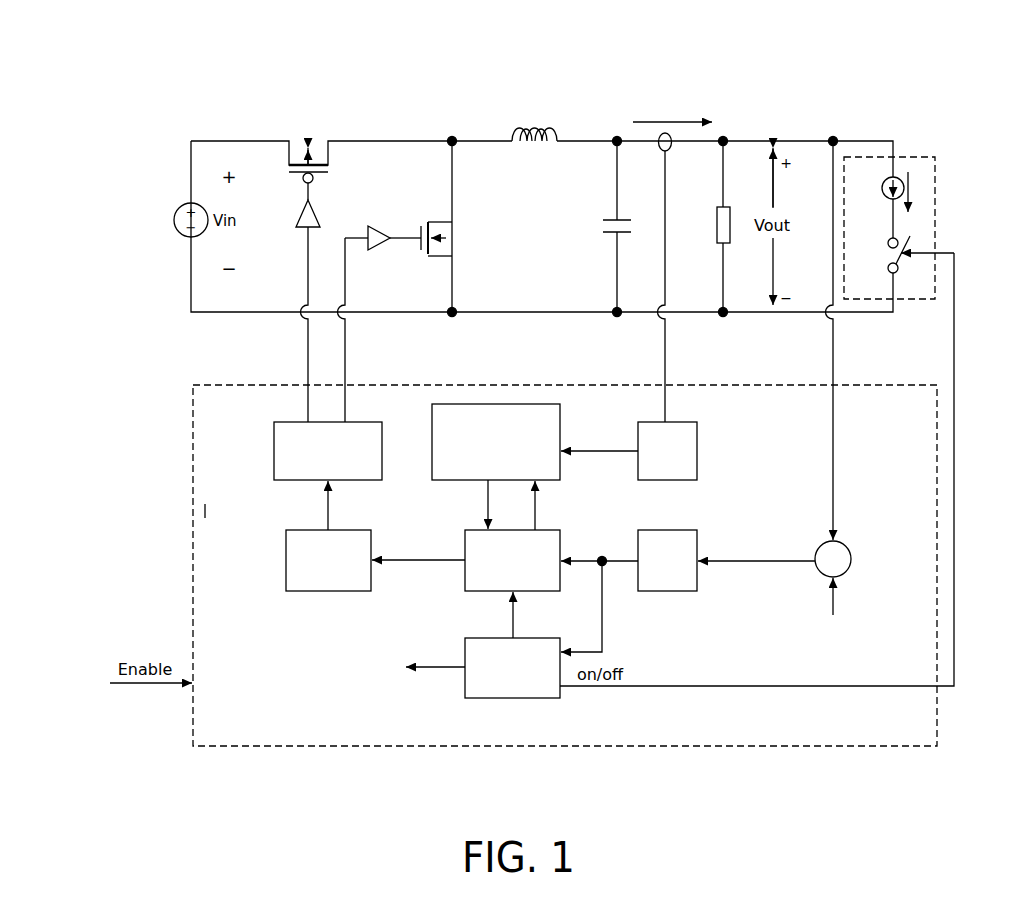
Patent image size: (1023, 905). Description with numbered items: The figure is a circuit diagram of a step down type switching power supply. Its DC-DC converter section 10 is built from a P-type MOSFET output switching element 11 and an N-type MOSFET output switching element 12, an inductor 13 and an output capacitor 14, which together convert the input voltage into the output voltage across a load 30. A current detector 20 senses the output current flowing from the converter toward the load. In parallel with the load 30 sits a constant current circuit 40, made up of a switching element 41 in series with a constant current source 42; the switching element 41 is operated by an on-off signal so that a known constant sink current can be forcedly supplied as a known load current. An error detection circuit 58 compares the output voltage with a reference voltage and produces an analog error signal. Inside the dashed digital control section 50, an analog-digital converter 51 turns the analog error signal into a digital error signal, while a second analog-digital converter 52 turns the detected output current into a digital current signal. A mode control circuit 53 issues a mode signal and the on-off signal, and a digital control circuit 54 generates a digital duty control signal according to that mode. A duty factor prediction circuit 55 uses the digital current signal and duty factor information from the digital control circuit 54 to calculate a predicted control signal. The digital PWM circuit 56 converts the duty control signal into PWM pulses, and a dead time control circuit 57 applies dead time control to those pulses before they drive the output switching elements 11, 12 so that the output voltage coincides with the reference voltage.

The DC-DC converter section 10 is at (295, 103).
The output switching element 11 is at (313, 142).
The output switching element 12 is at (453, 240).
The inductor 13 is at (541, 127).
The output capacitor 14 is at (603, 222).
The current detector 20 is at (660, 134).
The load 30 is at (733, 208).
The constant current circuit 40 is at (899, 227).
The switching element 41 is at (907, 270).
The constant current source 42 is at (887, 180).
The control section 50 is at (937, 707).
The analog-digital converter 51 is at (655, 591).
The analog-digital converter 52 is at (655, 480).
The mode control circuit 53 is at (510, 698).
The digital control circuit 54 is at (527, 591).
The duty factor prediction circuit 55 is at (553, 480).
The digital PWM circuit 56 is at (344, 591).
The dead time control circuit 57 is at (360, 480).
The error detection circuit 58 is at (852, 555).